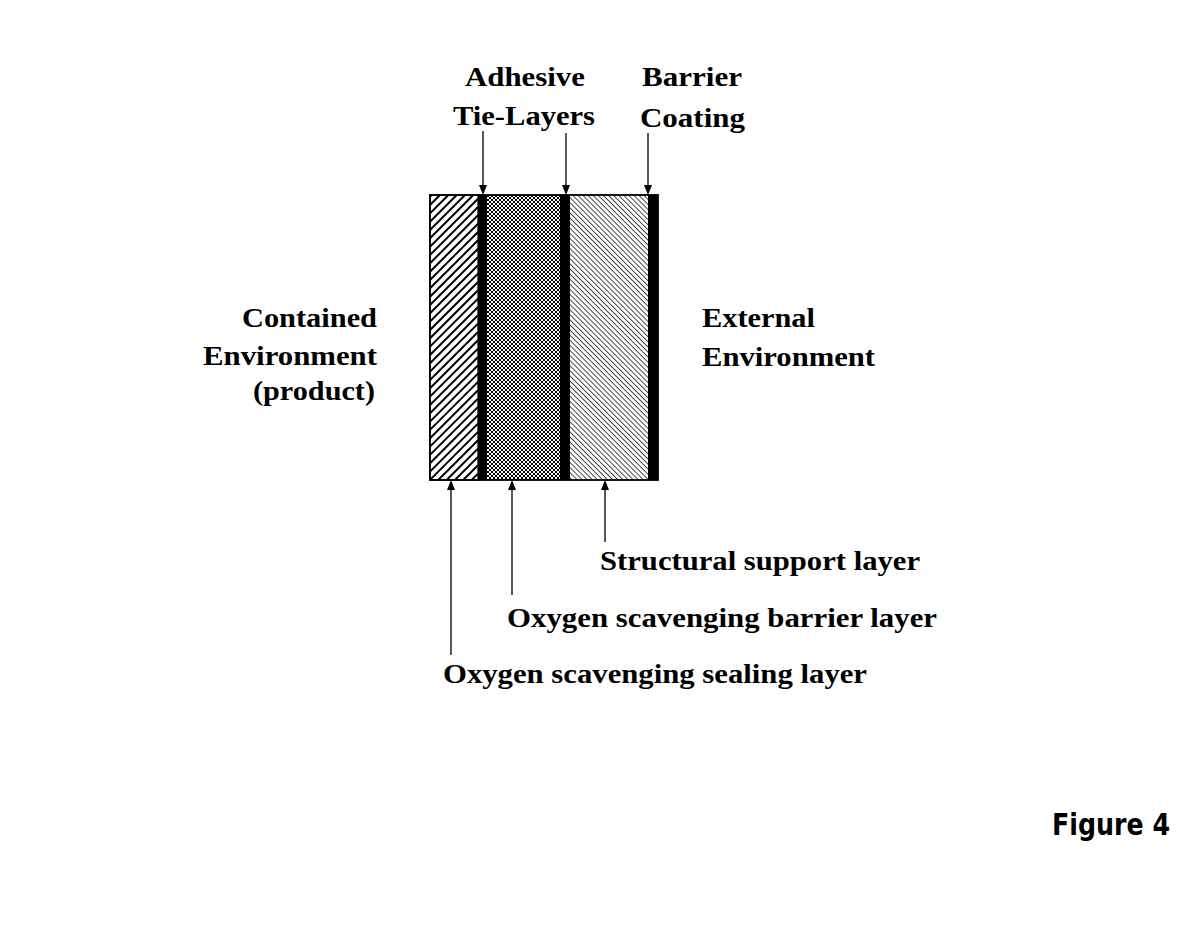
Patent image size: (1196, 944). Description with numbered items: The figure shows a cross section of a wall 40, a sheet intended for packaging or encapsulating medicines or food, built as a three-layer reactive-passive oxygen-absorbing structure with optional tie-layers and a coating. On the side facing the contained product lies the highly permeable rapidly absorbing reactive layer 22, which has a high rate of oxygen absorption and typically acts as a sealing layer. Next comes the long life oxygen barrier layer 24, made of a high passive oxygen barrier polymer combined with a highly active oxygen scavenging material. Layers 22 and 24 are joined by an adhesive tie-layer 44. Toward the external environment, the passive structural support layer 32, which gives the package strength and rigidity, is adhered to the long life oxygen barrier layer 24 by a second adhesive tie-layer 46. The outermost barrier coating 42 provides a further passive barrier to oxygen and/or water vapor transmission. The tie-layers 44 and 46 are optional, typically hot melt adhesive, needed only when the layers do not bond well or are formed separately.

The wall 40 is at (372, 143).
The rapidly absorbing reactive layer 22 is at (444, 268).
The long life oxygen barrier layer 24 is at (517, 225).
The passive structural support layer 32 is at (620, 433).
The barrier coating 42 is at (657, 232).
The adhesive tie-layer 44 is at (483, 479).
The adhesive tie-layer 46 is at (572, 197).